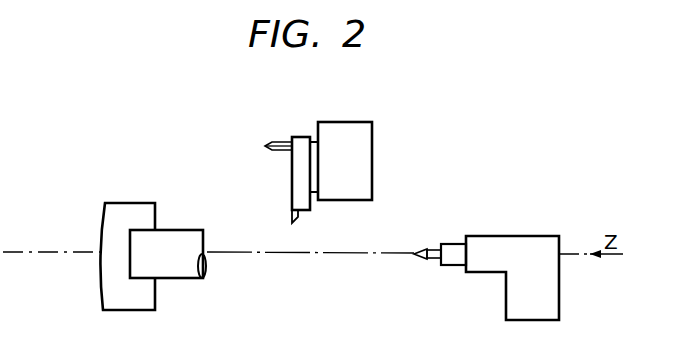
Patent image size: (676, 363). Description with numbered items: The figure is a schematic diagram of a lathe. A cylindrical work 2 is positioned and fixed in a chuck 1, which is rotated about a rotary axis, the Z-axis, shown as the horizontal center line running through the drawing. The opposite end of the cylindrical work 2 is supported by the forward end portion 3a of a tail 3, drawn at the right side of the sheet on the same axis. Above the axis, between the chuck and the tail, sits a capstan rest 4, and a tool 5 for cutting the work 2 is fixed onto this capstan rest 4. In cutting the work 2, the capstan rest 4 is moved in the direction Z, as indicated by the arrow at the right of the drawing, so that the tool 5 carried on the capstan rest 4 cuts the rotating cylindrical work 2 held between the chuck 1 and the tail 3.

The chuck 1 is at (123, 213).
The cylindrical work 2 is at (170, 240).
The tail 3 is at (511, 240).
The forward end portion 3a is at (422, 248).
The capstan rest 4 is at (300, 148).
The tool 5 is at (298, 218).